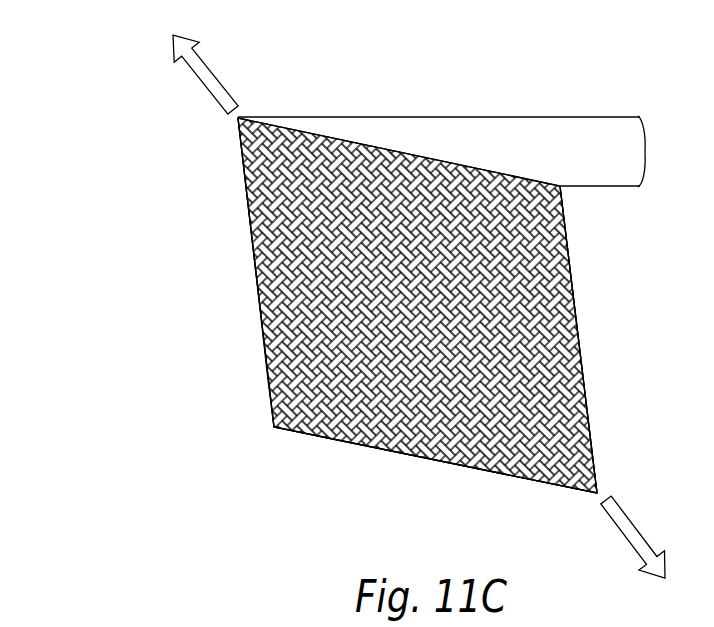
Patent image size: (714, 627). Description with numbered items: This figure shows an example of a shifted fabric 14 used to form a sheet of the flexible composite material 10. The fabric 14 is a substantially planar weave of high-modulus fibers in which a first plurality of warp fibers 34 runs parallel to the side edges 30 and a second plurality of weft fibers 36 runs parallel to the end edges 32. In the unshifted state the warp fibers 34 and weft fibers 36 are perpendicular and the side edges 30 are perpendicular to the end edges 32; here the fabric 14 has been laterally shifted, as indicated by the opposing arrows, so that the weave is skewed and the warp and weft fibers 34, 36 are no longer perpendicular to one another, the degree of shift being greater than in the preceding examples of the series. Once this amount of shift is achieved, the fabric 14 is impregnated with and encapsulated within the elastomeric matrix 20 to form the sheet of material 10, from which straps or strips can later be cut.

The flexible composite material 10 is at (190, 155).
The fibrous fabric 14 is at (252, 213).
The elastomeric matrix 20 is at (278, 300).
The weft fibers 36 is at (283, 328).
The warp fibers 34 is at (290, 363).
The side edges 30 is at (420, 458).
The end edges 32 is at (577, 332).